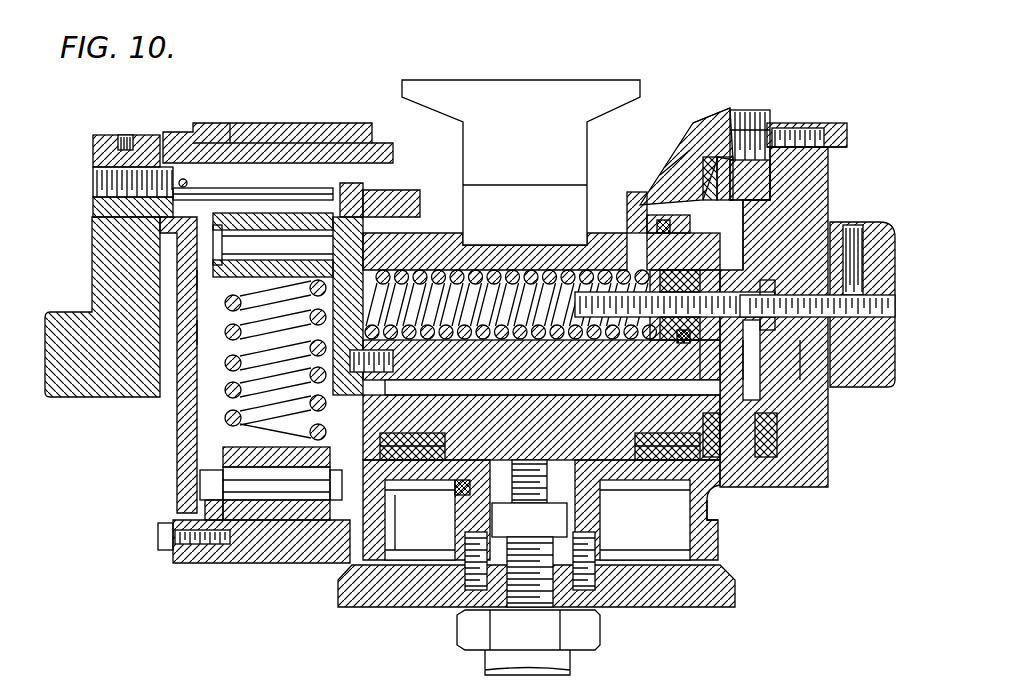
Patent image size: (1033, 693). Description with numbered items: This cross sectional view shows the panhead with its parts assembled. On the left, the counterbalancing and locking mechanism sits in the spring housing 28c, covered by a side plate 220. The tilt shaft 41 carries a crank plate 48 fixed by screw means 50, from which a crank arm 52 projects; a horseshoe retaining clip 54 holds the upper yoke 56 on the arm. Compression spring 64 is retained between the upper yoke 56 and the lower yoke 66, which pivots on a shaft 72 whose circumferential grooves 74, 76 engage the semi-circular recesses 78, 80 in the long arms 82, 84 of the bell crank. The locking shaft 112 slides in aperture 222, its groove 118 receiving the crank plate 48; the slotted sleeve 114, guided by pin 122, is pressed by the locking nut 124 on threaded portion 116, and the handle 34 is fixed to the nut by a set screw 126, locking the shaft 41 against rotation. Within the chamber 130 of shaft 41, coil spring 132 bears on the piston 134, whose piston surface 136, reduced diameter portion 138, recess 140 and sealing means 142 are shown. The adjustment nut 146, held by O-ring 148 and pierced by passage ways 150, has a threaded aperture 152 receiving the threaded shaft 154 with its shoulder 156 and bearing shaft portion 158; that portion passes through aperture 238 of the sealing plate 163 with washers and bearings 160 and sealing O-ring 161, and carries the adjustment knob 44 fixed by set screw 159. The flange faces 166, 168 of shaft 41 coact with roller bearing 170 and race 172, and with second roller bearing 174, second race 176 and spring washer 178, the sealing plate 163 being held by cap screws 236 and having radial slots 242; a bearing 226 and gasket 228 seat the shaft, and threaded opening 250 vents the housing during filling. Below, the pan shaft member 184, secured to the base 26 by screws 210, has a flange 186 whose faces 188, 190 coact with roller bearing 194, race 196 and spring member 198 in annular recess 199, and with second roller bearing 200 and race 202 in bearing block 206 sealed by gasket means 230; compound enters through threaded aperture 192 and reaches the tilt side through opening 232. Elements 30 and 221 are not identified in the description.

The base 26 is at (338, 595).
The stem 30 is at (530, 88).
The locking handle 34 is at (105, 237).
The shaft 41 is at (538, 262).
The adjustment knob 44 is at (885, 238).
The crank plate 48 is at (400, 213).
The screw means 50 is at (395, 360).
The crank arm 52 is at (273, 245).
The retaining clip 54 is at (223, 243).
The upper yoke 56 is at (197, 279).
The compression spring 64 is at (225, 360).
The lower yoke 66 is at (225, 455).
The shaft 72 is at (276, 483).
The circumferential groove 74 is at (210, 480).
The circumferential groove 76 is at (363, 392).
The semi-circular recess 78 is at (225, 505).
The semi-circular recess 80 is at (335, 490).
The long arm 82 is at (210, 515).
The long arm 84 is at (330, 527).
The shaft 112 is at (398, 166).
The slotted sleeve 114 is at (235, 158).
The threaded portion 116 is at (95, 163).
The groove 118 is at (328, 194).
The pin 122 is at (188, 183).
The locking nut 124 is at (95, 205).
The set screw 126 is at (126, 135).
The chamber 130 is at (482, 262).
The compression coil spring 132 is at (412, 285).
The piston 134 is at (593, 268).
The piston surface 136 is at (672, 262).
The reduced diameter portion 138 is at (580, 343).
The cylindrical recess 140 is at (612, 320).
The sealing means 142 is at (672, 340).
The adjustment nut 146 is at (708, 222).
The O-ring 148 is at (682, 360).
The passage ways 150 is at (770, 290).
The threaded aperture 152 is at (712, 282).
The threaded shaft 154 is at (770, 360).
The enlarged shoulder portion 156 is at (812, 345).
The bearing shaft portion 158 is at (820, 322).
The set screw 159 is at (886, 245).
The washers and bearings 160 is at (848, 230).
The sealing O-ring 161 is at (860, 275).
The sealing plate 163 is at (832, 160).
The flange face 166 is at (705, 170).
The flange face 168 is at (735, 190).
The roller bearing 170 is at (700, 160).
The race 172 is at (703, 182).
The second roller bearing 174 is at (716, 140).
The second race 176 is at (748, 110).
The spring washer 178 is at (785, 140).
The shaft member 184 is at (672, 512).
The flange portion 186 is at (630, 486).
The flange face 188 is at (665, 470).
The flange face 190 is at (662, 440).
The threaded aperture 192 is at (527, 458).
The roller bearing 194 is at (445, 450).
The race 196 is at (470, 440).
The spring member 198 is at (420, 430).
The annular recess 199 is at (635, 450).
The second roller bearing 200 is at (408, 490).
The second race 202 is at (400, 505).
The bearing block 206 is at (428, 575).
The screws 210 is at (598, 612).
The side plate 220 is at (185, 305).
The post 221 is at (740, 400).
The aperture 222 is at (340, 140).
The bearing 226 is at (748, 425).
The fluid sealing gasket 228 is at (637, 205).
The gasket means 230 is at (465, 492).
The opening 232 is at (648, 396).
The cap screws 236 is at (845, 132).
The aperture 238 is at (895, 303).
The radially extending slots 242 is at (752, 240).
The threaded opening 250 is at (760, 112).
The spring housing 28c is at (208, 335).